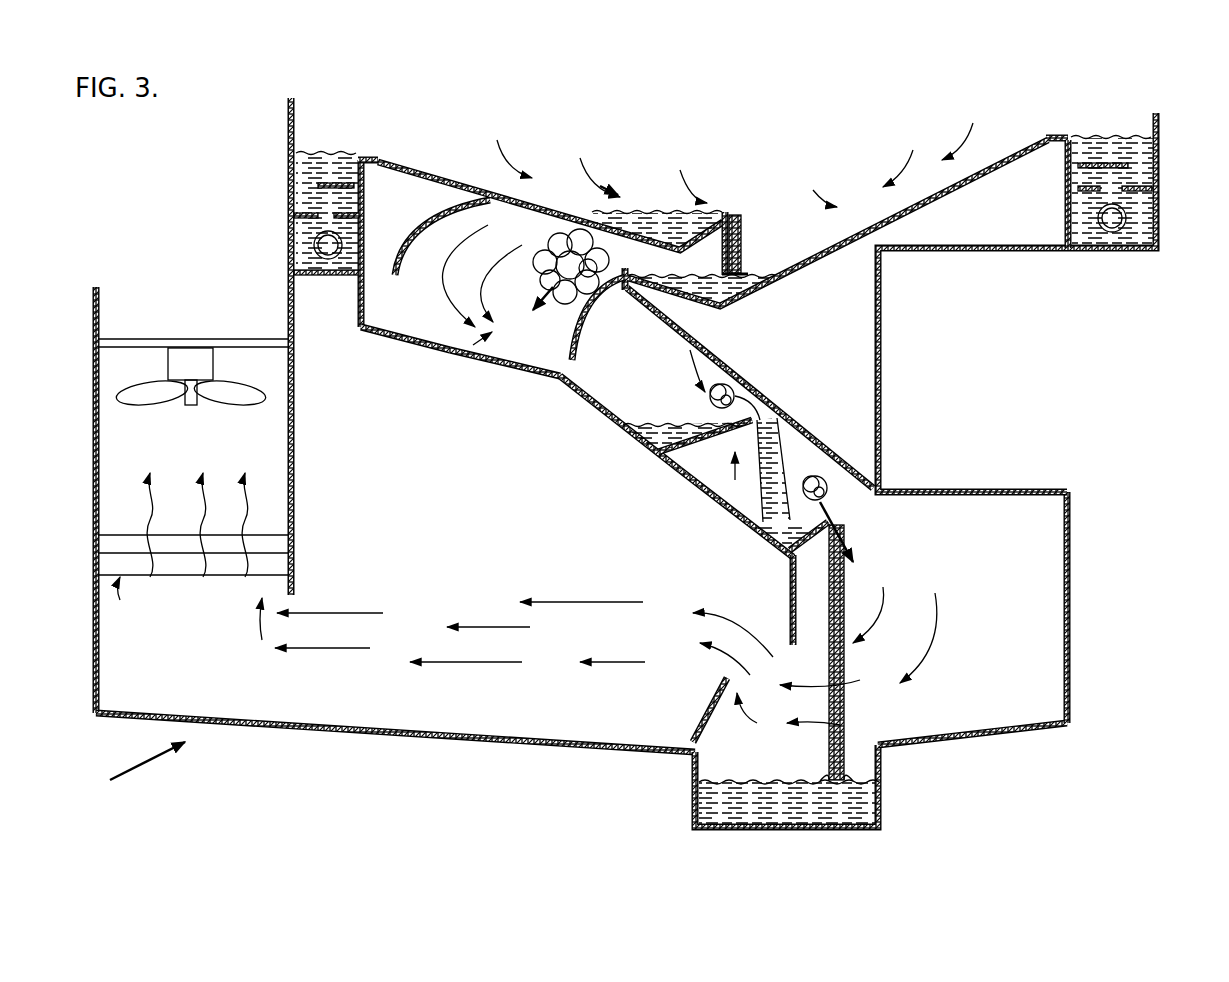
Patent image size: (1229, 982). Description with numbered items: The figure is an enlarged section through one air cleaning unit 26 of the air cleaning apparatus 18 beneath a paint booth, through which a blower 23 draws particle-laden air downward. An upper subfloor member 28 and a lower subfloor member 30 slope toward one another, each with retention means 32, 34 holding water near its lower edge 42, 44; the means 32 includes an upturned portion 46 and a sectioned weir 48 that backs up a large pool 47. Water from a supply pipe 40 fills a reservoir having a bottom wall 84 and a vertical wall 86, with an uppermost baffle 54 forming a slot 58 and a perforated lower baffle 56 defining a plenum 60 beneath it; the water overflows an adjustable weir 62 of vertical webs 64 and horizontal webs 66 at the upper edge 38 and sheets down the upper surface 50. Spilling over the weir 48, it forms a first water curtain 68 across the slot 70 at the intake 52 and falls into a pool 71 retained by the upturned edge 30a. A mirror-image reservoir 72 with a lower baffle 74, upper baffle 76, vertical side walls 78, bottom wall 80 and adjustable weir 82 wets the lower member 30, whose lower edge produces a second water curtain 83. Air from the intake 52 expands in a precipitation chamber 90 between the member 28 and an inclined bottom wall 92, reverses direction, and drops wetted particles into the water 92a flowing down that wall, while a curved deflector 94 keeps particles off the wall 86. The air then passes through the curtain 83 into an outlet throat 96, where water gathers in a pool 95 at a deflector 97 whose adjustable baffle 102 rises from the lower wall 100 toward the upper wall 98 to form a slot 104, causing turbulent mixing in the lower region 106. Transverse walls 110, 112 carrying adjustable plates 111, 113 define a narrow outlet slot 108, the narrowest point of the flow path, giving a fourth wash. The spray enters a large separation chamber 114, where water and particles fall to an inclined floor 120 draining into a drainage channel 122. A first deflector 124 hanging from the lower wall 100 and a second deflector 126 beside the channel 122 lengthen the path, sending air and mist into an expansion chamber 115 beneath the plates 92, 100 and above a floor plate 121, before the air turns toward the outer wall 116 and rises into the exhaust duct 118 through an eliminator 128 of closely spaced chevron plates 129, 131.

The air cleaning apparatus 18 is at (129, 774).
The blower 23 is at (148, 388).
The air cleaning unit 26 is at (1072, 604).
The upper subfloor member 28 is at (537, 268).
The lower subfloor member 30 is at (825, 272).
The upturned edge 30a is at (652, 316).
The water retention means 32 is at (731, 200).
The water retention means 34 is at (688, 310).
The upper edge 38 is at (381, 163).
The water supply pipe 40 is at (326, 262).
The lower edge 42 is at (704, 176).
The lower edge 44 is at (622, 297).
The upturned portion 46 is at (632, 226).
The large pool 47 is at (627, 212).
The weir 48 is at (736, 225).
The upper surface 50 is at (520, 200).
The intake 52 is at (613, 240).
The uppermost baffle 54 is at (364, 195).
The lower baffle 56 is at (300, 227).
The slot 58 is at (305, 190).
The plenum 60 is at (312, 257).
The adjustable weir 62 is at (365, 142).
The vertical webs 64 is at (352, 182).
The horizontal webs 66 is at (375, 157).
The first water curtain 68 is at (700, 252).
The slot 70 is at (743, 243).
The pool 71 is at (745, 298).
The reservoir 72 is at (1118, 124).
The lower baffle 74 is at (1150, 190).
The upper baffle 76 is at (1068, 178).
The vertical side walls 78 is at (1158, 165).
The bottom wall 80 is at (1142, 252).
The adjustable weir 82 is at (1078, 164).
The second water curtain 83 is at (572, 327).
The bottom wall 84 is at (360, 321).
The vertical wall 86 is at (378, 245).
The precipitation chamber 90 is at (478, 357).
The inclined bottom wall 92 is at (560, 366).
The water 92a is at (470, 415).
The sloping deflector 94 is at (400, 240).
The pool 95 is at (648, 445).
The outlet throat 96 is at (730, 390).
The deflector 97 is at (668, 465).
The upper wall 98 is at (748, 398).
The lower wall 100 is at (755, 530).
The adjustable baffle 102 is at (712, 475).
The slot 104 is at (770, 410).
The lower region 106 is at (798, 440).
The outlet slot 108 is at (850, 517).
The transverse wall 110 is at (848, 495).
The adjustable plate 111 is at (785, 550).
The transverse wall 112 is at (826, 612).
The adjustable plate 113 is at (872, 480).
The separation chamber 114 is at (1040, 670).
The expansion chamber 115 is at (502, 546).
The outer wall 116 is at (100, 660).
The exhaust duct 118 is at (441, 643).
The inclined floor 120 is at (1048, 728).
The floor plate 121 is at (452, 738).
The drainage channel 122 is at (882, 793).
The first deflector 124 is at (790, 570).
The second deflector 126 is at (708, 712).
The eliminator 128 is at (183, 562).
The horizontal plates 129 is at (272, 533).
The horizontal plates 131 is at (280, 570).